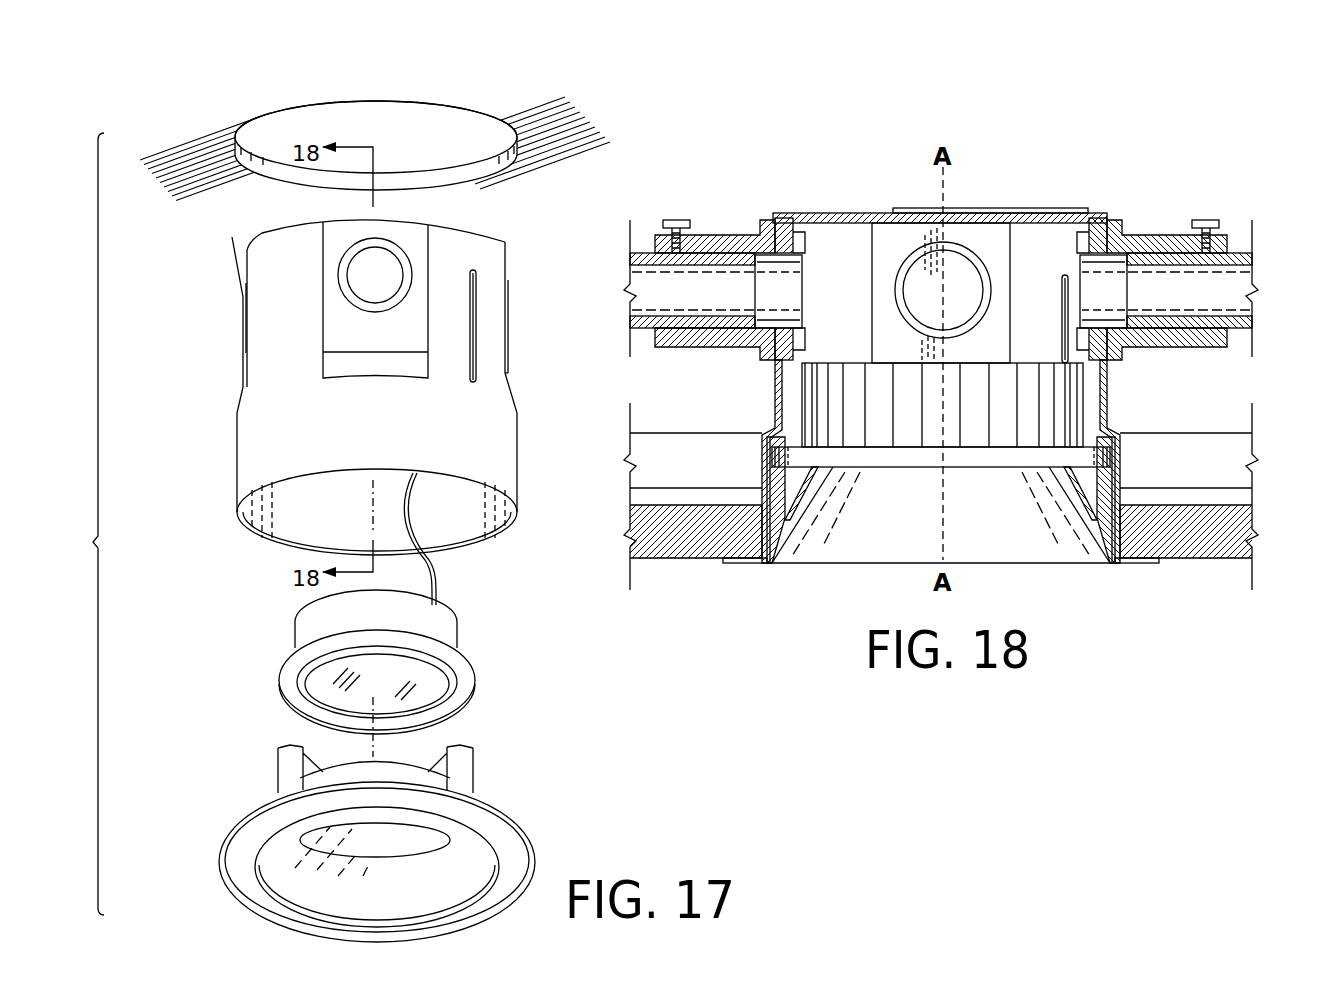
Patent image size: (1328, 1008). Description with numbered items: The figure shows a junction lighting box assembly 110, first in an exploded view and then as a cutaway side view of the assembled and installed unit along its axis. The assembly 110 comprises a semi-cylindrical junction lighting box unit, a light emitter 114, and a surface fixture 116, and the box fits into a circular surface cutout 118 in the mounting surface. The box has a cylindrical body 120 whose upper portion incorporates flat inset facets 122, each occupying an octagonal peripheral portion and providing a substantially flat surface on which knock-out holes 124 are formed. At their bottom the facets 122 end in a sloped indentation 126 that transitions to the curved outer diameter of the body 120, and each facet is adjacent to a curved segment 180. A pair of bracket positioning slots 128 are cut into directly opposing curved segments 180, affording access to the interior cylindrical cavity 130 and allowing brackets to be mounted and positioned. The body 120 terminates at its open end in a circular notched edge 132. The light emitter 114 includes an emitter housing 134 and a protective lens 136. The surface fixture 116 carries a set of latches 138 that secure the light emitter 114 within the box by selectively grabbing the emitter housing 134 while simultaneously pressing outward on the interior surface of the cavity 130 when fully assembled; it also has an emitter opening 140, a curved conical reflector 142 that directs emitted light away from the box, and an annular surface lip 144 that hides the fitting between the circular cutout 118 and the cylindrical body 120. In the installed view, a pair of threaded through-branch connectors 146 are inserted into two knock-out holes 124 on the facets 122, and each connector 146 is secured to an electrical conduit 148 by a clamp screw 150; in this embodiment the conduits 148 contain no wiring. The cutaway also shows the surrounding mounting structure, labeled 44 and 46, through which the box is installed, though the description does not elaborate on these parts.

In FIG. 17, the junction lighting box assembly 110 is at (75, 524).
In FIG. 17, the light emitter 114 is at (241, 667).
In FIG. 18, the light emitter 114 is at (796, 382).
In FIG. 17, the surface fixture 116 is at (216, 795).
In FIG. 18, the surface fixture 116 is at (826, 570).
In FIG. 17, the circular surface cutout 118 is at (462, 143).
In FIG. 17, the cylindrical body 120 is at (453, 437).
In FIG. 17, the flat inset facets 122 is at (503, 263).
In FIG. 18, the flat inset facets 122 is at (893, 238).
In FIG. 17, the knock-out holes 124 is at (375, 270).
In FIG. 18, the knock-out holes 124 is at (968, 277).
In FIG. 17, the sloped indentation 126 is at (243, 397).
In FIG. 17, the bracket positioning slots 128 is at (473, 330).
In FIG. 18, the bracket positioning slots 128 is at (1063, 320).
In FIG. 17, the interior cylindrical cavity 130 is at (298, 513).
In FIG. 18, the interior cylindrical cavity 130 is at (836, 261).
In FIG. 17, the circular notched edge 132 is at (278, 480).
In FIG. 17, the emitter housing 134 is at (450, 666).
In FIG. 18, the emitter housing 134 is at (877, 402).
In FIG. 17, the protective lens 136 is at (418, 687).
In FIG. 17, the latches 138 is at (297, 777).
In FIG. 18, the latches 138 is at (770, 500).
In FIG. 17, the emitter opening 140 is at (347, 832).
In FIG. 17, the curved conical reflector 142 is at (380, 892).
In FIG. 18, the curved conical reflector 142 is at (1037, 527).
In FIG. 17, the annular surface lip 144 is at (502, 895).
In FIG. 18, the annular surface lip 144 is at (740, 558).
In FIG. 18, the threaded through-branch connectors 146 is at (1123, 237).
In FIG. 18, the electrical conduits 148 is at (1150, 298).
In FIG. 18, the clamp screw 150 is at (1207, 223).
In FIG. 17, the curved segment 180 is at (490, 374).
In FIG. 18, the curved segment 180 is at (1050, 256).
In FIG. 18, the ceiling panel 44 is at (1217, 525).
In FIG. 18, the ceiling support 46 is at (1207, 457).